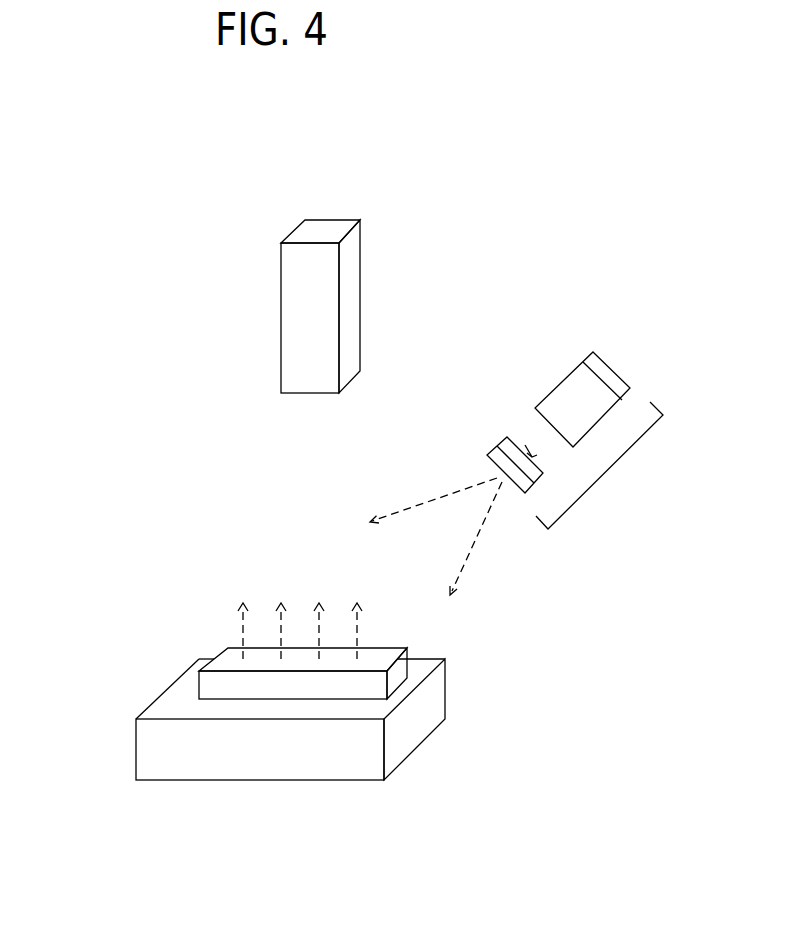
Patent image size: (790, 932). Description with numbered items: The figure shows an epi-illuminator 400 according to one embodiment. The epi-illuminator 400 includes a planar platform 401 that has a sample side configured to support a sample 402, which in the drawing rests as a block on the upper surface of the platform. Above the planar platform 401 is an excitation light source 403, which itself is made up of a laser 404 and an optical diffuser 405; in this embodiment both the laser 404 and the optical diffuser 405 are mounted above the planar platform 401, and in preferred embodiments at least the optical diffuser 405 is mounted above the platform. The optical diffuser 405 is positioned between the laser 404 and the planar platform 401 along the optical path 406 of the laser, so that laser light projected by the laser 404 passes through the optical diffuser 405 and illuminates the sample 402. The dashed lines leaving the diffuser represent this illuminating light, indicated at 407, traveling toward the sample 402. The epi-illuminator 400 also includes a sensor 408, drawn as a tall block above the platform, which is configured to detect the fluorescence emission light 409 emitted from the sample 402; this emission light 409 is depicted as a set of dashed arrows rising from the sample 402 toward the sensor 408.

The epi-illuminator 400 is at (122, 228).
The planar platform 401 is at (167, 707).
The sample 402 is at (230, 657).
The excitation light source 403 is at (607, 472).
The laser 404 is at (608, 378).
The optical diffuser 405 is at (501, 447).
The optical path 406 is at (548, 436).
The light beam 407 is at (455, 565).
The sensor 408 is at (353, 237).
The fluorescence emission light 409 is at (357, 623).